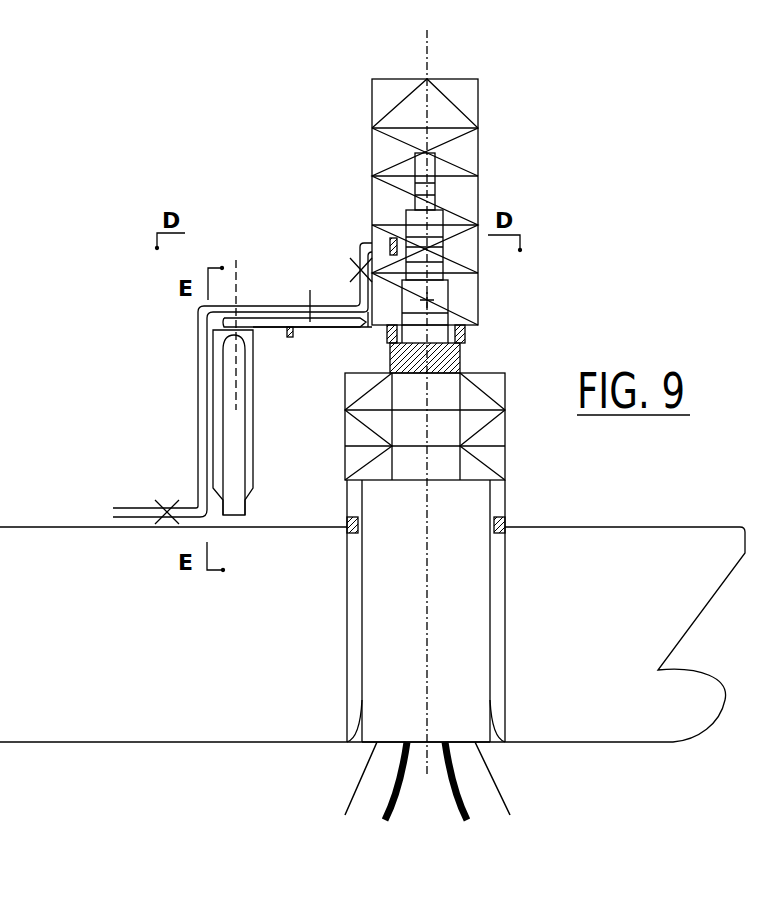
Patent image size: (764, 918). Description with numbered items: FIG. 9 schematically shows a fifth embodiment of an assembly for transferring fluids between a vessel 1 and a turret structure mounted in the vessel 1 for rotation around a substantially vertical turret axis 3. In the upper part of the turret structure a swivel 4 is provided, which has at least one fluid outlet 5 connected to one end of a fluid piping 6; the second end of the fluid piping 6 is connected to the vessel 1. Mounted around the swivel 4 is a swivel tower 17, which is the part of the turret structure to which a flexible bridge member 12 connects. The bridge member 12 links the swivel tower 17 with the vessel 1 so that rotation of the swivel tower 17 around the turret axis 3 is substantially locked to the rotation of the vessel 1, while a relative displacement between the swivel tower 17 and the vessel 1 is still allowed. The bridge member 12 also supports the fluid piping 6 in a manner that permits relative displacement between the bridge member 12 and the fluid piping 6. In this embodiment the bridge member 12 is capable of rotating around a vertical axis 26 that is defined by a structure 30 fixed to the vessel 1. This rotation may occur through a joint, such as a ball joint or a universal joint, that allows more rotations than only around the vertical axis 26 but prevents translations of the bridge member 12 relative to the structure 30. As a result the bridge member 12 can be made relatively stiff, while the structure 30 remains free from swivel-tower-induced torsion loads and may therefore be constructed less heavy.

The vessel 1 is at (46, 540).
The turret axis 3 is at (427, 55).
The swivel 4 is at (443, 247).
The fluid outlet 5 is at (255, 506).
The fluid piping 6 is at (280, 300).
The flexible bridge member 12 is at (292, 337).
The swivel tower 17 is at (478, 112).
The vertical axis 26 is at (236, 243).
The structure fixed to the vessel 30 is at (240, 452).